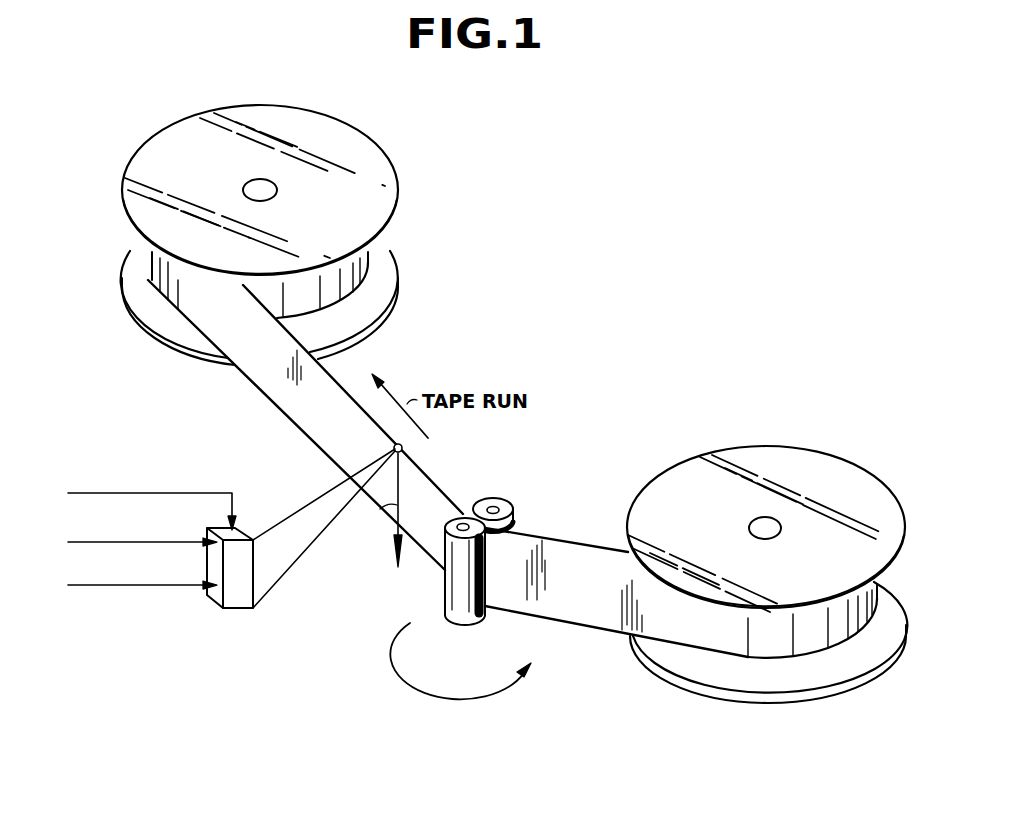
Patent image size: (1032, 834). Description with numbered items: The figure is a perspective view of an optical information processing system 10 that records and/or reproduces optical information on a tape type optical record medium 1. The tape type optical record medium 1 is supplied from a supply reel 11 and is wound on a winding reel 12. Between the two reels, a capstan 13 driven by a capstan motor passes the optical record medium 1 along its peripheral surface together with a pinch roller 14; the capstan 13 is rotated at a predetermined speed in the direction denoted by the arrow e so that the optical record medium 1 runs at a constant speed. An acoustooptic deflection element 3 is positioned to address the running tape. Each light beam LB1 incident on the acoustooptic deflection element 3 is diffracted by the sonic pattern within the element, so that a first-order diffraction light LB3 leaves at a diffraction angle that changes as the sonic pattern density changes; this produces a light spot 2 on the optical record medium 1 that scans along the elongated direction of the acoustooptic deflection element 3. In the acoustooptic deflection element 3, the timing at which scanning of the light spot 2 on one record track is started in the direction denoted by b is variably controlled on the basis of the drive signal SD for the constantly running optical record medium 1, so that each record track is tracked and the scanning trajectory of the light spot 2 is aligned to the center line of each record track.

The tape type optical record medium 1 is at (442, 498).
The light spot 2 is at (403, 447).
The acoustooptic deflection element 3 is at (237, 608).
The optical information processing system 10 is at (586, 664).
The supply reel 11 is at (772, 453).
The winding reel 12 is at (380, 167).
The capstan 13 is at (467, 622).
The pinch roller 14 is at (500, 507).
The drive signal SD is at (148, 494).
The light beam LB1 is at (163, 588).
The first-order diffraction light LB3 is at (313, 543).
The scanning direction of the light spot b is at (381, 510).
The rotation direction of the capstan e is at (465, 691).